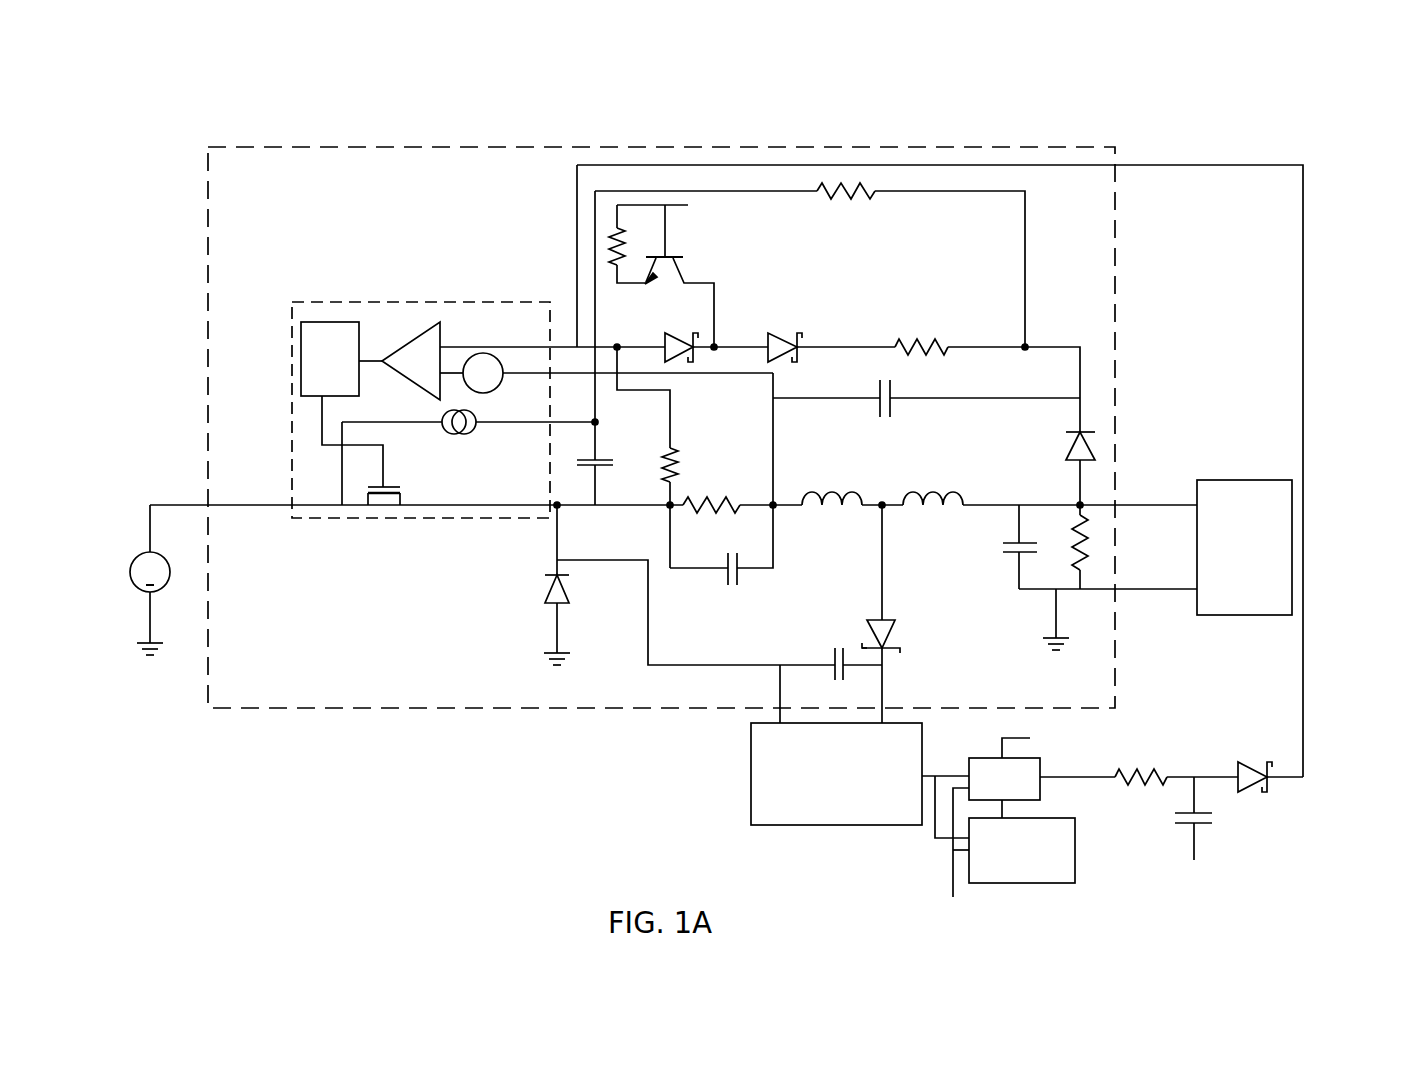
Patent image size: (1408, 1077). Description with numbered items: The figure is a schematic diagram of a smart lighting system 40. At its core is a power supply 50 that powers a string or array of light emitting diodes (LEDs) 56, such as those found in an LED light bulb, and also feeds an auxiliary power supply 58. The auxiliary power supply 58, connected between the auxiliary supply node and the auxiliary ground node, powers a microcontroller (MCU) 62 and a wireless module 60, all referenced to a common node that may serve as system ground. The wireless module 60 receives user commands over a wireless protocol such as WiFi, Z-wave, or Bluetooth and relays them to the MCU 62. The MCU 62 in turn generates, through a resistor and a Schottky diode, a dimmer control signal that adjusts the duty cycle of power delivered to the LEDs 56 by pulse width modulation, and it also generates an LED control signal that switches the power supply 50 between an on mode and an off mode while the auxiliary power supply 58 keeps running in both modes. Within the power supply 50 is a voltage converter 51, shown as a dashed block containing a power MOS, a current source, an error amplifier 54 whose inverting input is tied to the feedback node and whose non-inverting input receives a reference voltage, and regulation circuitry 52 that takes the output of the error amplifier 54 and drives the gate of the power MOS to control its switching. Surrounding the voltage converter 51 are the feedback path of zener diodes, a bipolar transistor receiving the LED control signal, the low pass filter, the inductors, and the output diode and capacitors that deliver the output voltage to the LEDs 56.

The smart lighting system 40 is at (742, 86).
The power supply 50 is at (208, 200).
The voltage converter 51 is at (292, 448).
The regulation circuitry 52 is at (301, 352).
The error amplifier 54 is at (435, 322).
The light emitting diodes (LEDs) 56 is at (1210, 615).
The auxiliary power supply 58 is at (865, 825).
The wireless module 60 is at (1047, 883).
The microcontroller (MCU) 62 is at (1041, 782).